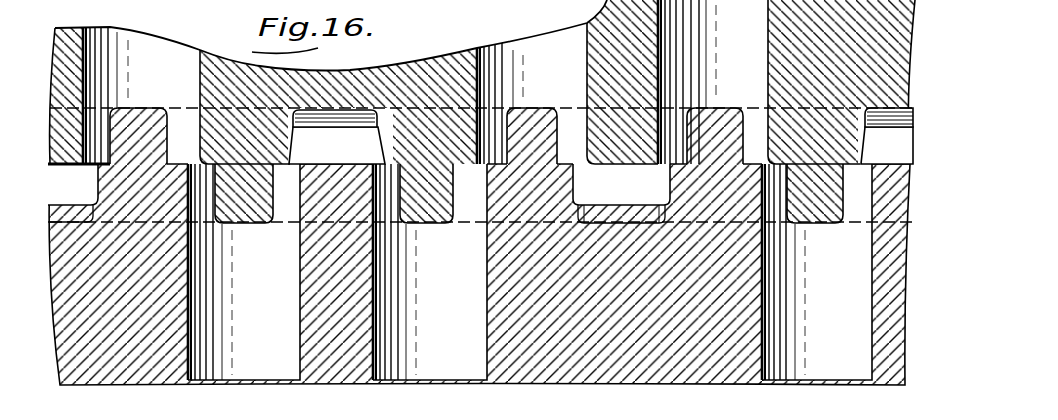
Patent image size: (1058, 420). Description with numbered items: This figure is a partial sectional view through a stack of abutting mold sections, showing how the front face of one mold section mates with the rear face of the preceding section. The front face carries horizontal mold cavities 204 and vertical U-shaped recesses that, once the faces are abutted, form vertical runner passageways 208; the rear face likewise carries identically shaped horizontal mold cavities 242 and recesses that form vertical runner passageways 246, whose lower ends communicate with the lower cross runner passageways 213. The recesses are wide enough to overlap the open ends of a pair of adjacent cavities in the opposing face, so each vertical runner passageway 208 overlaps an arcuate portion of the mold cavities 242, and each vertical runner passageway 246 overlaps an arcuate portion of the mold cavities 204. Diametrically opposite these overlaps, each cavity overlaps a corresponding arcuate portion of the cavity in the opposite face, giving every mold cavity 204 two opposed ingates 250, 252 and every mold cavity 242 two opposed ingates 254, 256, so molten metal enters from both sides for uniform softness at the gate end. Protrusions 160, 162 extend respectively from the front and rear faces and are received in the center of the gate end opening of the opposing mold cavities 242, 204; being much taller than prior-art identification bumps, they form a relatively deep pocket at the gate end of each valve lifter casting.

The protrusion 160 is at (530, 272).
The protrusion 162 is at (145, 108).
The horizontal mold cavity 204 is at (166, 69).
The vertical runner passageway 208 is at (390, 125).
The lower cross runner passageway 213 is at (790, 106).
The horizontal mold cavity 242 is at (270, 318).
The vertical runner passageway 246 is at (78, 226).
The ingate 250 is at (203, 137).
The ingate 252 is at (100, 152).
The ingate 254 is at (784, 178).
The ingate 256 is at (868, 168).